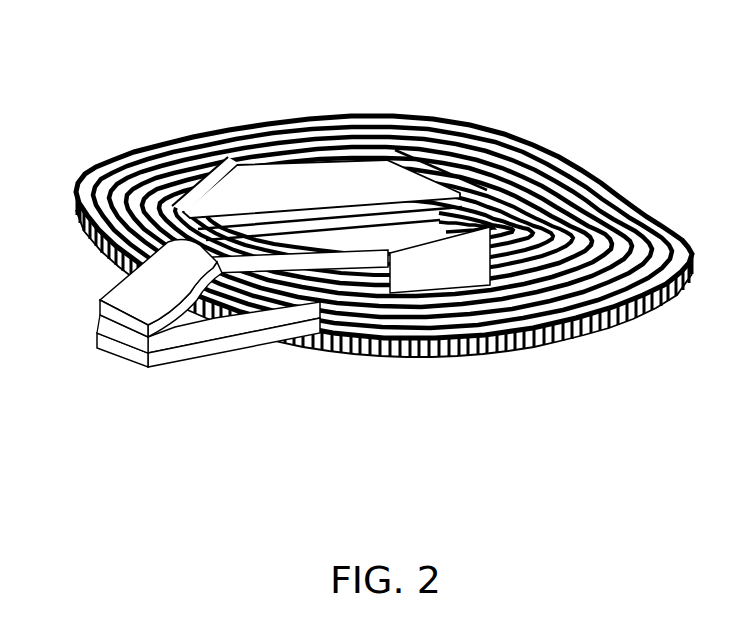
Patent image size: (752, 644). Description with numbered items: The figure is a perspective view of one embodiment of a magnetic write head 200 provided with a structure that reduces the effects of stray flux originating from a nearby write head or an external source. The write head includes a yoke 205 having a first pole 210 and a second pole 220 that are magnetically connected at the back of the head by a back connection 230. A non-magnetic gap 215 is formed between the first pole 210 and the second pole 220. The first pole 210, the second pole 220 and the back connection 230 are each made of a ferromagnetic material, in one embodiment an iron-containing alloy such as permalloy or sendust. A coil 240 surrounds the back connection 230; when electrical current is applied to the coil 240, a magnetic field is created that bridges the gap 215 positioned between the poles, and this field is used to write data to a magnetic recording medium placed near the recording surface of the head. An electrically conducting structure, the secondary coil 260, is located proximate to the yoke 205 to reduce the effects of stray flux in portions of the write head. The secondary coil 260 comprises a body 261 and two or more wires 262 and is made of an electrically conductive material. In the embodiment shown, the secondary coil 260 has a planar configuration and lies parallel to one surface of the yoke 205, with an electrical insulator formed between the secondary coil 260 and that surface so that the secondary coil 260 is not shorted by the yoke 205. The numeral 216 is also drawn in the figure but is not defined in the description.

The magnetic write head 200 is at (647, 458).
The yoke 205 is at (310, 177).
The first pole 210 is at (115, 297).
The non-magnetic gap 215 is at (100, 327).
The inner winding turns 216 is at (480, 305).
The second pole 220 is at (160, 360).
The back connection 230 is at (482, 168).
The coil 240 is at (545, 150).
The secondary coil 260 is at (218, 130).
The body 261 is at (262, 130).
The wires 262 is at (457, 253).